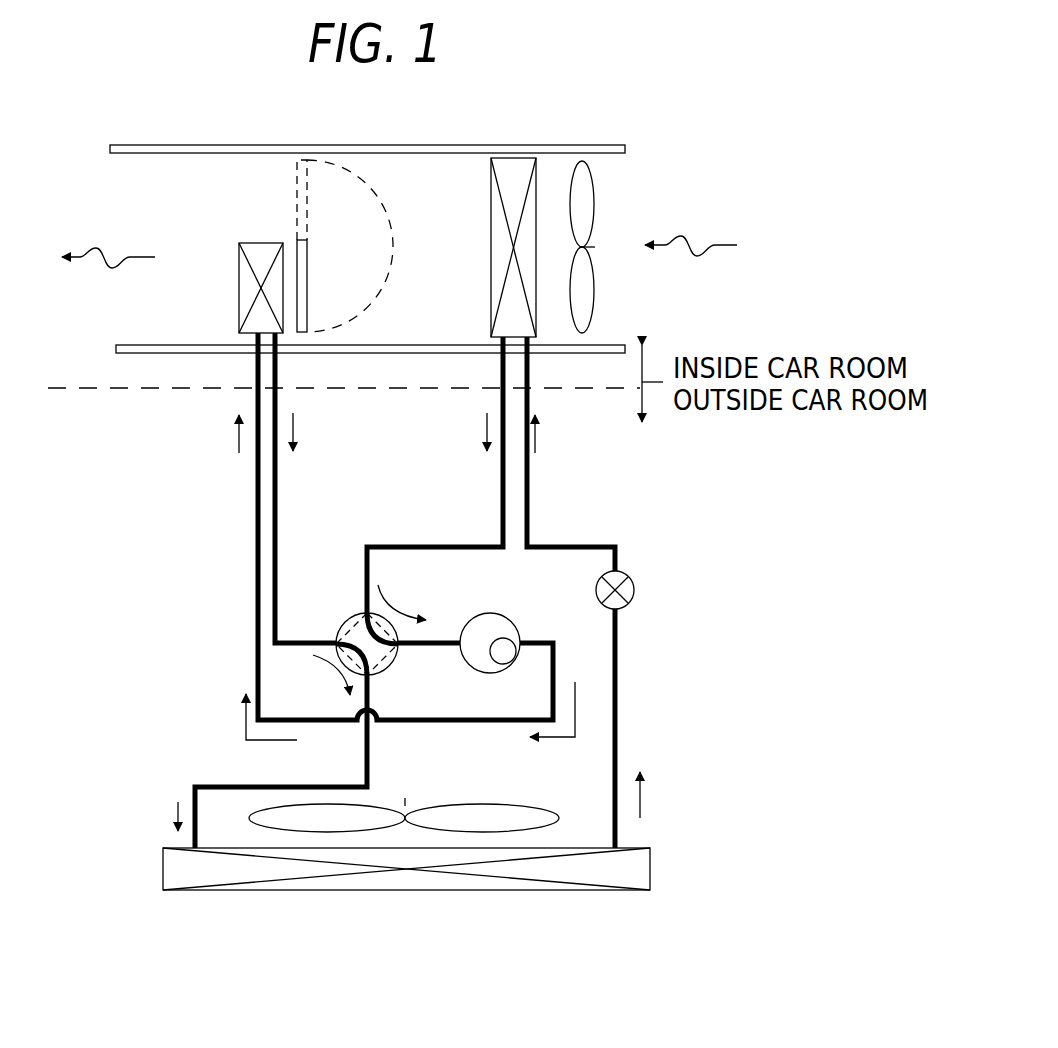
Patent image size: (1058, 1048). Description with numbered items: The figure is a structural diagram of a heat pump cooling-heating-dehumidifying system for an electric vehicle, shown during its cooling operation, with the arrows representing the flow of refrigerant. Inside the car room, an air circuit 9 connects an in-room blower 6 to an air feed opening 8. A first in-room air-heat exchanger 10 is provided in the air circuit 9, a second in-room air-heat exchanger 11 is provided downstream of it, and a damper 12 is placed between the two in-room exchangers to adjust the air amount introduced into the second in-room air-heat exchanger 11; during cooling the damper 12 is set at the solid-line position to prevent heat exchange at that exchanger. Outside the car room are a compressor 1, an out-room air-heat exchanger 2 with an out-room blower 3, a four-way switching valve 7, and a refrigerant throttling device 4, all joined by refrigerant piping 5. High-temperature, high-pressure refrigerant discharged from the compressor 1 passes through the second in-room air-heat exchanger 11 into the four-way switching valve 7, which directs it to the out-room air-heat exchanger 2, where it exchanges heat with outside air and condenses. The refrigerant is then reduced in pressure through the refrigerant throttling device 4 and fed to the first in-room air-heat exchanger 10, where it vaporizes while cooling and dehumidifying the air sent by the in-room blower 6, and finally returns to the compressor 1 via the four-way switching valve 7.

The compressor 1 is at (507, 613).
The out-room air-heat exchanger 2 is at (653, 868).
The out-room blower 3 is at (535, 804).
The refrigerant throttling device 4 is at (636, 584).
The refrigerant piping 5 is at (502, 487).
The in-room blower 6 is at (597, 198).
The four-way switching valve 7 is at (343, 620).
The air feed opening 8 is at (98, 188).
The air circuit 9 is at (150, 347).
The first in-room air-heat exchanger 10 is at (513, 158).
The second in-room air-heat exchanger 11 is at (238, 260).
The damper 12 is at (297, 200).